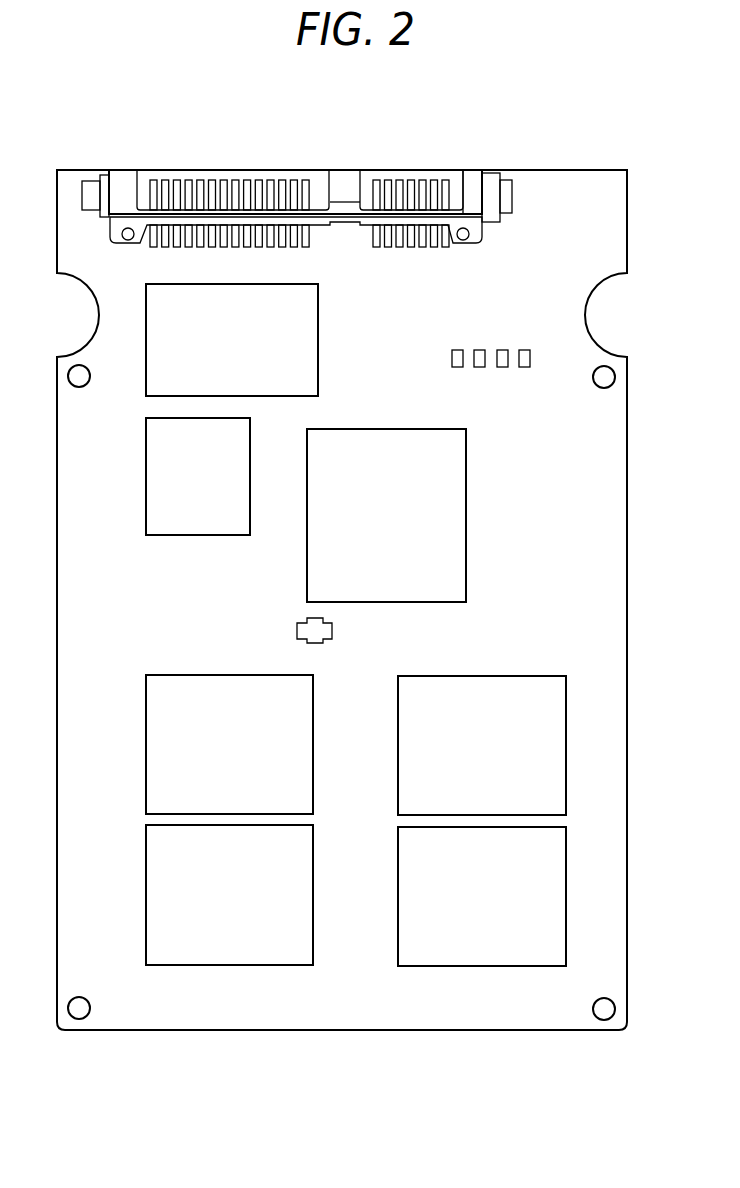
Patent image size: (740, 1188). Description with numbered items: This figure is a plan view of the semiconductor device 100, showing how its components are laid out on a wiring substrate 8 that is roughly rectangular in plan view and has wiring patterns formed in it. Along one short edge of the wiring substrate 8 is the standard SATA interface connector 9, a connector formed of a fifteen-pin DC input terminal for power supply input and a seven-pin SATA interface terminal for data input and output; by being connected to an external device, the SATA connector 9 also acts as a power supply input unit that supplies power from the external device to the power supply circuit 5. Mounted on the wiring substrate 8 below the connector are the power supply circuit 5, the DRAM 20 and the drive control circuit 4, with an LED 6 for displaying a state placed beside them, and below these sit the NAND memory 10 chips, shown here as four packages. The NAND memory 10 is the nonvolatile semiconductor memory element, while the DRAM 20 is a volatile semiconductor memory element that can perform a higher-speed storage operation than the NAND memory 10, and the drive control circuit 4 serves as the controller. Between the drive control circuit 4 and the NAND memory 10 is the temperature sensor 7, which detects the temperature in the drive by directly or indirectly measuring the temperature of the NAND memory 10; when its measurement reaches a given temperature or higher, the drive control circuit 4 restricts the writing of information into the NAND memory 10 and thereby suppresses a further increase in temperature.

The semiconductor device 100 is at (554, 145).
The wiring substrate 8 is at (627, 225).
The standard SATA interface connector 9 is at (145, 179).
The power supply circuit 5 is at (318, 340).
The LED 6 is at (535, 343).
The DRAM 20 is at (199, 536).
The drive control circuit 4 is at (386, 429).
The temperature sensor 7 is at (297, 629).
The NAND flash memory 10 is at (146, 749).